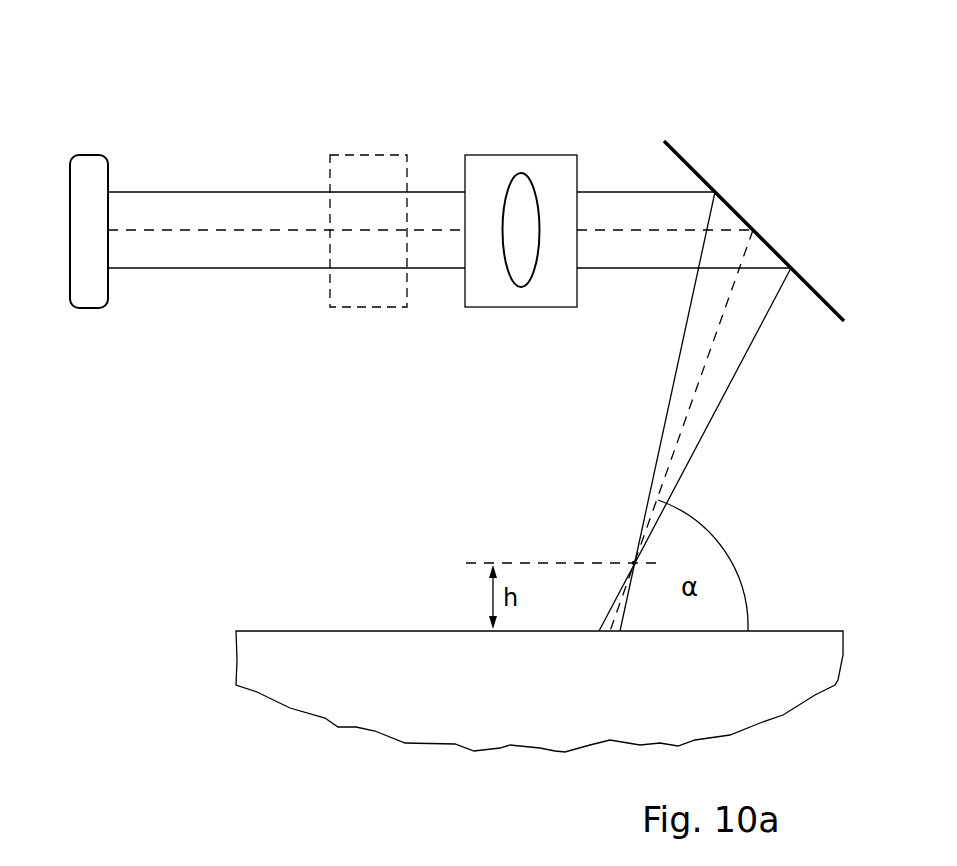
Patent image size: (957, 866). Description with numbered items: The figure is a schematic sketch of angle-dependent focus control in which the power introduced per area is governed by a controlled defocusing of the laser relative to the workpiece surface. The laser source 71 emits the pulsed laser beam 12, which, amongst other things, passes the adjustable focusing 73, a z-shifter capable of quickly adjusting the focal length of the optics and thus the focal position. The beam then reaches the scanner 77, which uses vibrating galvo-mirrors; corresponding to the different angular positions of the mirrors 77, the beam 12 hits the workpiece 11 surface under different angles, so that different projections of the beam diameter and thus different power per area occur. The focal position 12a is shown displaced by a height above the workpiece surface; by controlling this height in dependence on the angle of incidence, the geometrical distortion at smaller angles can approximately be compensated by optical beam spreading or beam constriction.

The laser source 71 is at (100, 292).
The laser beam 12 is at (237, 258).
The adjustable focusing 73 is at (494, 295).
The scanner 77 is at (690, 168).
The focal position 12a is at (634, 563).
The workpiece 11 is at (582, 692).